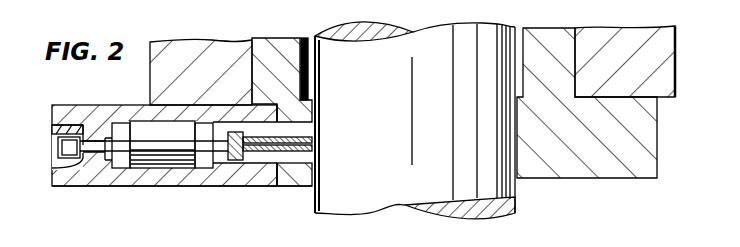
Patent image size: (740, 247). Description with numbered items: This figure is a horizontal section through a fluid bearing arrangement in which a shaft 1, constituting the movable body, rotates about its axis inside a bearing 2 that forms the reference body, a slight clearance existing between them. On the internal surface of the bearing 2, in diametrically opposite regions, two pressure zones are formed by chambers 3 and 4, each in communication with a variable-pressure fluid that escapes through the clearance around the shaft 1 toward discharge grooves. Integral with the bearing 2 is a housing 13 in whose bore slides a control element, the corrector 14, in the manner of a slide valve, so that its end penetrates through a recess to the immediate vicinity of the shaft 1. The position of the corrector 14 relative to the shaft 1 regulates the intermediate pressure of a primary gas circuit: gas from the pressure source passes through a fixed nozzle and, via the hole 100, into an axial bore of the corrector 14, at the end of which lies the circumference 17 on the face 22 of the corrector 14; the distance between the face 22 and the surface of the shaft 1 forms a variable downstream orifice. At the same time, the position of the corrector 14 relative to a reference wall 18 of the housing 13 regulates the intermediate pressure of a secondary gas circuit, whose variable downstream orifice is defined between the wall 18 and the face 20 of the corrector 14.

The shaft 1 is at (415, 120).
The bearing 2 is at (573, 170).
The chamber 3 is at (313, 67).
The chamber 4 is at (521, 58).
The housing 13 is at (143, 185).
The corrector 14 is at (162, 144).
The circumference 17 is at (316, 147).
The reference wall 18 is at (52, 130).
The face 20 is at (52, 170).
The face 22 is at (316, 138).
The hole 100 is at (233, 160).